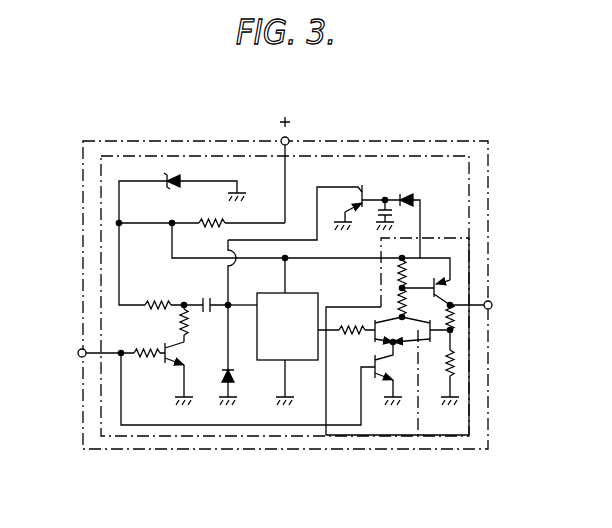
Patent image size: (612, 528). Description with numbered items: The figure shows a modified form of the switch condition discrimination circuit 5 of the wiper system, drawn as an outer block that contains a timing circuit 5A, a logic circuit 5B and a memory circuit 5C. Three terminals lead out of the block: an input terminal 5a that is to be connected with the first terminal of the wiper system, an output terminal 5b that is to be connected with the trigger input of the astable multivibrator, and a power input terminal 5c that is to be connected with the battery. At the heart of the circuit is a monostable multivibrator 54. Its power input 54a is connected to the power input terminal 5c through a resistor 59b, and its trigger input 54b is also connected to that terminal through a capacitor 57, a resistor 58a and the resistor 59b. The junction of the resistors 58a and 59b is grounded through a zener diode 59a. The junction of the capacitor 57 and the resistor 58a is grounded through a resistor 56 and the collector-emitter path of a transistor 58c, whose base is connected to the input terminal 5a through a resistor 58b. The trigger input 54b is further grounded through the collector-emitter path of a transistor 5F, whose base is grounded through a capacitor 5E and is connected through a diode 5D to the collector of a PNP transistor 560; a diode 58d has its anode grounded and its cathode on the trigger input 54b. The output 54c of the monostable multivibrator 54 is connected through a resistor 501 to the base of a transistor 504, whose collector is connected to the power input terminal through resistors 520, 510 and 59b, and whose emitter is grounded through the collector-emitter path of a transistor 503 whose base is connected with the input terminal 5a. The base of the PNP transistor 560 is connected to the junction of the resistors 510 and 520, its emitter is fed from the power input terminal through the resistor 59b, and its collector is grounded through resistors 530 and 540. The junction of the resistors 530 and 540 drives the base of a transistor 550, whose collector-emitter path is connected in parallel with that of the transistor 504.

The switch condition discrimination circuit 5 is at (446, 141).
The timing circuit 5A is at (103, 157).
The logic circuit 5B is at (373, 436).
The memory circuit 5C is at (457, 238).
The diode 5D is at (417, 193).
The capacitor 5E is at (373, 217).
The transistor 5F is at (355, 187).
The input terminal 5a is at (78, 350).
The output terminal 5b is at (493, 306).
The power input terminal 5c is at (292, 138).
The monostable multivibrator 54 is at (318, 284).
The power input 54a is at (283, 292).
The trigger input 54b is at (257, 310).
The output 54c is at (285, 365).
The resistor 56 is at (197, 326).
The capacitor 57 is at (207, 297).
The resistor 58a is at (160, 296).
The resistor 58b is at (147, 348).
The transistor 58c is at (171, 371).
The diode 58d is at (236, 376).
The zener diode 59a is at (173, 171).
The resistor 59b is at (217, 222).
The resistor 501 is at (352, 333).
The transistor 503 is at (387, 384).
The transistor 504 is at (373, 358).
The resistor 510 is at (400, 273).
The resistor 520 is at (400, 301).
The resistor 530 is at (456, 318).
The resistor 540 is at (462, 366).
The transistor 550 is at (378, 277).
The PNP transistor 560 is at (451, 283).